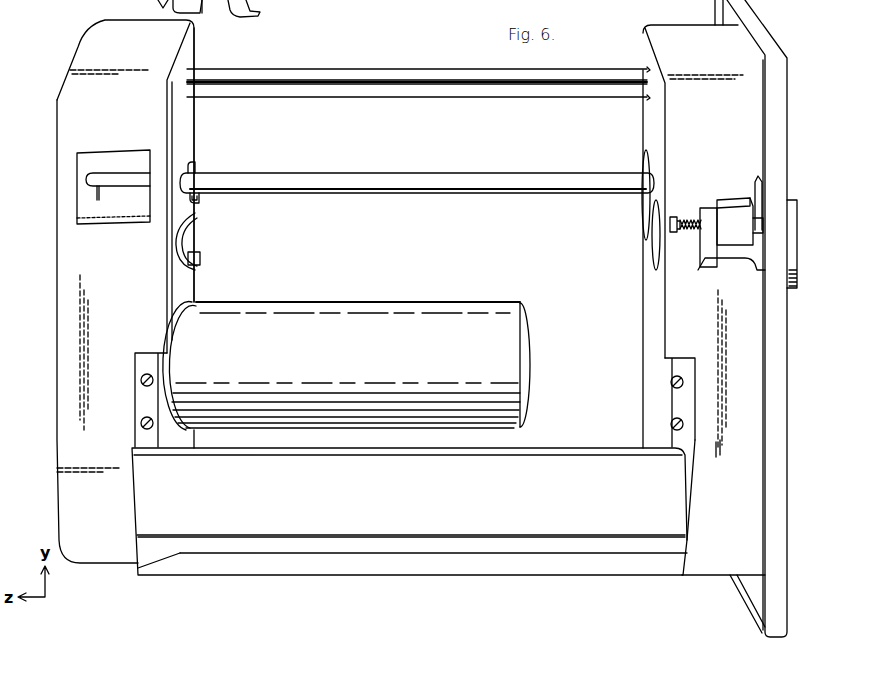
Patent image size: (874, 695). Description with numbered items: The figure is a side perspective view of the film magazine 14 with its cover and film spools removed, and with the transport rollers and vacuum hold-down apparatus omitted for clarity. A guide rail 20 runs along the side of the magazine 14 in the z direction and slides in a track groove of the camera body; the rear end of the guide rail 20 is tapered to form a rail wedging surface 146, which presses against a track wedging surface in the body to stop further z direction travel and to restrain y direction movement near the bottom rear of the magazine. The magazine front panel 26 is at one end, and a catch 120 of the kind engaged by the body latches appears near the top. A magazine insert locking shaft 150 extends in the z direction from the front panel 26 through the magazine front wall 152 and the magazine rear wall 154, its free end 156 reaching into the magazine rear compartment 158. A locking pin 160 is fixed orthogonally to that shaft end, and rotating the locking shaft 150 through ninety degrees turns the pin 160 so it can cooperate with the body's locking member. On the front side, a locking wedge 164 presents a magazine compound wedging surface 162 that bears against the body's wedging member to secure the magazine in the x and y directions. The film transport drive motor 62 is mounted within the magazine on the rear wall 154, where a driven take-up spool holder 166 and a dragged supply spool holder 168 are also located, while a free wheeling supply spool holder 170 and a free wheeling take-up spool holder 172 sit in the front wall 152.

The film magazine 14 is at (401, 62).
The guide rail 20 is at (510, 570).
The magazine front panel 26 is at (785, 172).
The film transport drive motor 62 is at (418, 310).
The catch 120 is at (268, 0).
The rail wedging surface 146 is at (138, 565).
The magazine insert locking shaft 150 is at (407, 175).
The magazine front wall 152 is at (647, 127).
The magazine rear wall 154 is at (183, 140).
The free end 156 is at (80, 193).
The magazine rear compartment 158 is at (68, 347).
The locking pin 160 is at (96, 173).
The magazine compound wedging surface 162 is at (753, 197).
The locking wedge 164 is at (747, 237).
The take-up spool holder 166 is at (201, 253).
The dragged supply spool holder 168 is at (200, 197).
The free wheeling supply spool holder 170 is at (641, 200).
The free wheeling take-up spool holder 172 is at (651, 242).